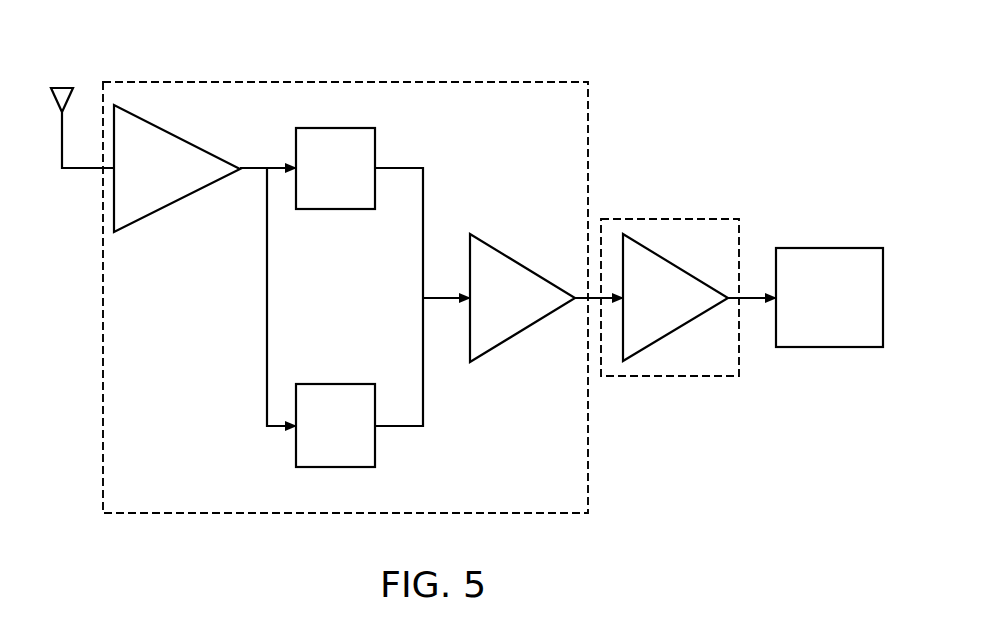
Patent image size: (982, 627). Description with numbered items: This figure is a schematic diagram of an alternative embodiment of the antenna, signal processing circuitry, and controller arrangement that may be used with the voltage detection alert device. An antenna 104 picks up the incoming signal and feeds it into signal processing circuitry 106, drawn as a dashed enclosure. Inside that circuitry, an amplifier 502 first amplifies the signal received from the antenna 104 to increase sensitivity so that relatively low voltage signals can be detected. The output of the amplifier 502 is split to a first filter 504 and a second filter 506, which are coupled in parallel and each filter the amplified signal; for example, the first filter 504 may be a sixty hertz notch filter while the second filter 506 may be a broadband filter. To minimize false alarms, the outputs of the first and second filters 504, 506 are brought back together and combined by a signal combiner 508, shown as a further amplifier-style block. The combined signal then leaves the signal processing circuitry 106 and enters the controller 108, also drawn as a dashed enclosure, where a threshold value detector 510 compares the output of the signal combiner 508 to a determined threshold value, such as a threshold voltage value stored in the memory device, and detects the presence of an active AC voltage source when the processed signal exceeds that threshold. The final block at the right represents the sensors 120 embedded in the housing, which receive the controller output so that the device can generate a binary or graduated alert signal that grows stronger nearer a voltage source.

The antenna 104 is at (62, 88).
The signal processing circuitry 106 is at (329, 82).
The controller 108 is at (673, 219).
The sensors 120 is at (827, 248).
The amplifier 502 is at (178, 202).
The first filter 504 is at (337, 209).
The second filter 506 is at (333, 384).
The signal combiner 508 is at (527, 330).
The threshold value detector 510 is at (673, 333).